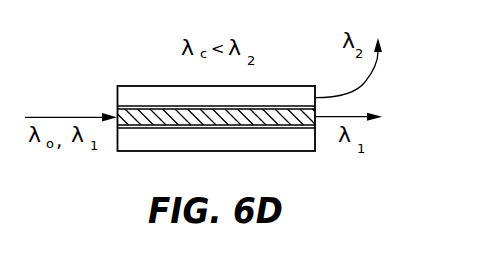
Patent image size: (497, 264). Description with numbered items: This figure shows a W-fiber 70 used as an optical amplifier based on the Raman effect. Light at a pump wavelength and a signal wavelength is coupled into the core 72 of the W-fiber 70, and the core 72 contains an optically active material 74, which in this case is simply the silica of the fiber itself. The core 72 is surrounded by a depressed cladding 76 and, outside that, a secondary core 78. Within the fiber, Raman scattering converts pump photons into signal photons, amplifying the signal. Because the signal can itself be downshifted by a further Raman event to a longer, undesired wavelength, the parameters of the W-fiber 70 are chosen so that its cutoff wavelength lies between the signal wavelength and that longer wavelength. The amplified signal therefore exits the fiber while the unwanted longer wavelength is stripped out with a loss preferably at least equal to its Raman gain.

The W-fiber 70 is at (104, 38).
The core 72 is at (118, 115).
The optically active material 74 is at (167, 111).
The depressed cladding 76 is at (158, 106).
The secondary core 78 is at (305, 140).